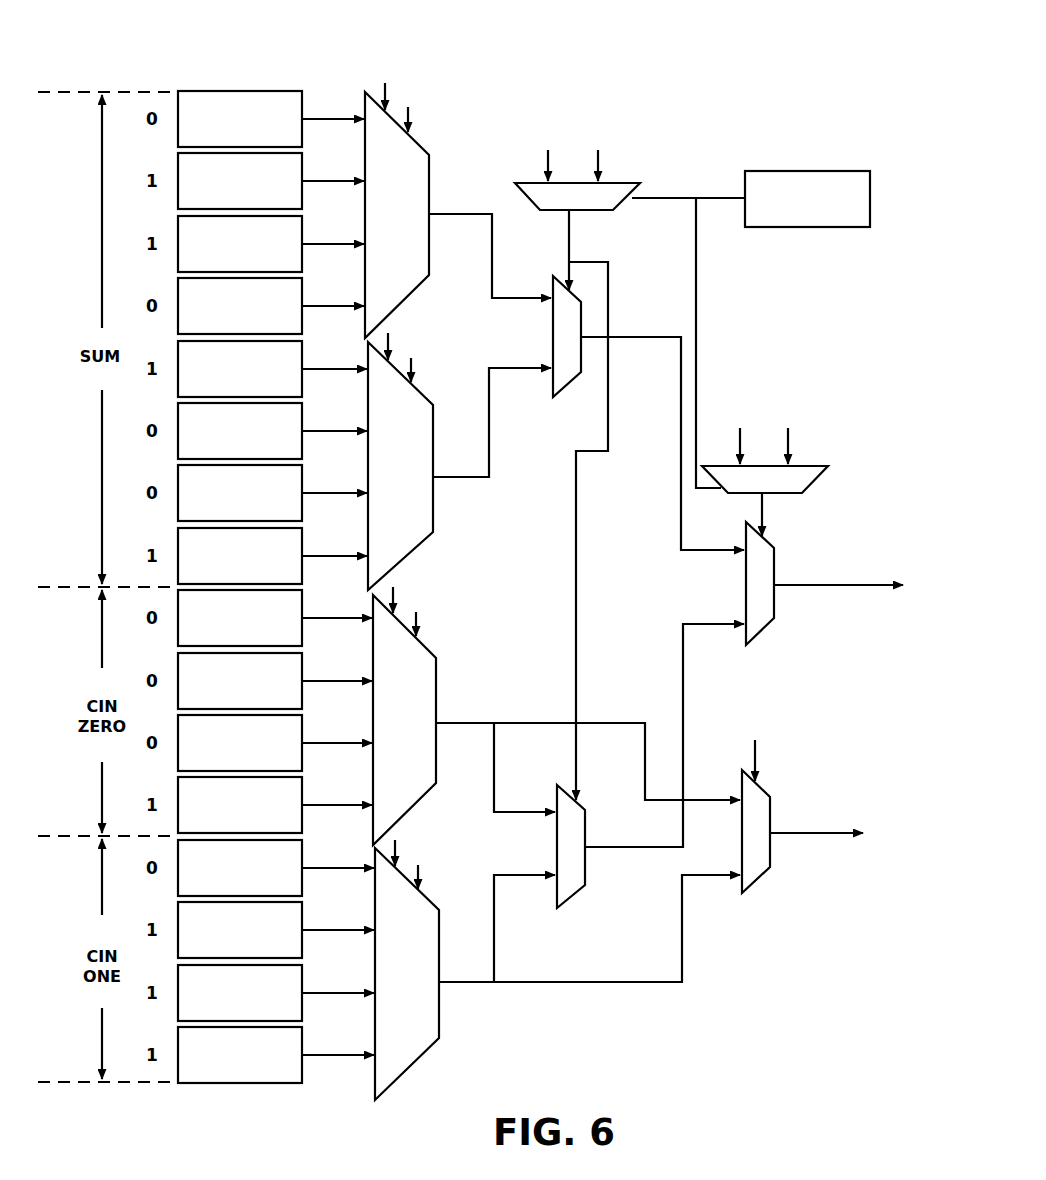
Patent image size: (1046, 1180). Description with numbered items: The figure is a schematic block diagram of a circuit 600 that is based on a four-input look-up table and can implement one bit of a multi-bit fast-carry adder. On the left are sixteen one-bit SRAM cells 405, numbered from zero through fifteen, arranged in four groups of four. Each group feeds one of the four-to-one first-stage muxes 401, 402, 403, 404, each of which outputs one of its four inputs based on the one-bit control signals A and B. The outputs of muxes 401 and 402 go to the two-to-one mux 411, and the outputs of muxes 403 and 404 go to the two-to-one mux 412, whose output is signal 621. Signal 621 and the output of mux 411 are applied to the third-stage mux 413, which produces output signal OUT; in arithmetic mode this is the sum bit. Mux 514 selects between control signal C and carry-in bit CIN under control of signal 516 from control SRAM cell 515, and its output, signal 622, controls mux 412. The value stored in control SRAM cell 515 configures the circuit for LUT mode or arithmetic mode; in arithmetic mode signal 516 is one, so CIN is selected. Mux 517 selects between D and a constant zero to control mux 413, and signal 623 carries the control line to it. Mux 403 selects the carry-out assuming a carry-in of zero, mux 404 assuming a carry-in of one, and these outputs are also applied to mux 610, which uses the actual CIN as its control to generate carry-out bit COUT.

The circuit 600 is at (652, 52).
The SRAM cells 405 is at (212, 89).
The first-stage mux 401 is at (383, 226).
The first-stage mux 402 is at (386, 478).
The first-stage mux 403 is at (391, 731).
The first-stage mux 404 is at (393, 985).
The second-stage mux 411 is at (568, 390).
The second-stage mux 412 is at (568, 897).
The third-stage mux 413 is at (775, 560).
The mux 514 is at (628, 183).
The control SRAM cell 515 is at (815, 171).
The signal 516 is at (657, 198).
The mux 517 is at (807, 466).
The mux 610 is at (757, 880).
The signal 621 is at (683, 667).
The signal 622 is at (576, 563).
The control signal line 623 is at (697, 280).